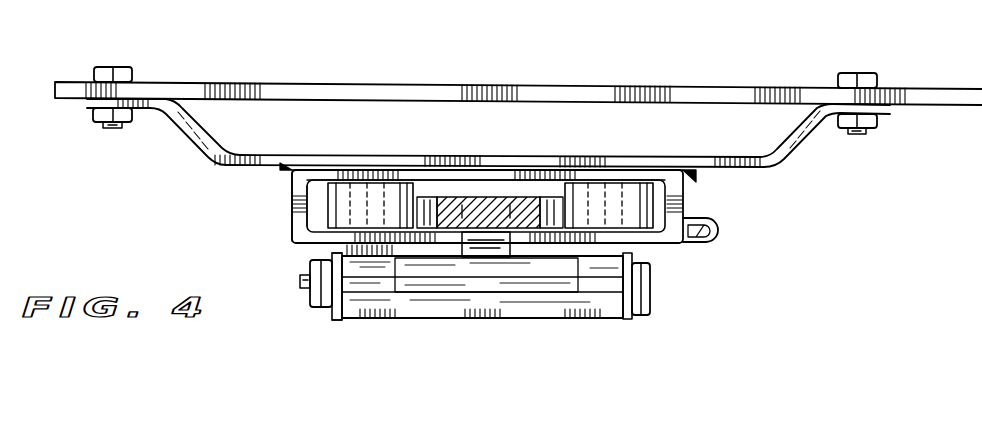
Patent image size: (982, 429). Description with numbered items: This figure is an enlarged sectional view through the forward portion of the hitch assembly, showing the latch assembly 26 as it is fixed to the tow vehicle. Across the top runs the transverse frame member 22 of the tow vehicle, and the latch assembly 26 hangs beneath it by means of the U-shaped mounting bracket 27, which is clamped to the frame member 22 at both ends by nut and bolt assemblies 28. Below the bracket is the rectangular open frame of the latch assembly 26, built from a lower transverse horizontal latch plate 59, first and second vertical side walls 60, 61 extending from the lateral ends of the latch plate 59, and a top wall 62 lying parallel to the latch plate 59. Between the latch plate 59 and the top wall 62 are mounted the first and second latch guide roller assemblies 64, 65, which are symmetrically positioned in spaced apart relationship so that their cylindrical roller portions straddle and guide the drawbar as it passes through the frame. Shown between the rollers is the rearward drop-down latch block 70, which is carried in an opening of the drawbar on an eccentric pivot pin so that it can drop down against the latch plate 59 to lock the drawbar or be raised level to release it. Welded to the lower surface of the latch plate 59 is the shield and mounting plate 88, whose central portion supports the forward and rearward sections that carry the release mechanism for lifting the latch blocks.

The transverse frame member 22 is at (628, 88).
The latch assembly 26 is at (335, 327).
The U-shaped mounting bracket 27 is at (793, 152).
The nut and bolt assemblies 28 is at (108, 67).
The latch plate 59 is at (292, 218).
The first vertical side wall 60 is at (685, 202).
The second vertical side wall 61 is at (301, 173).
The top wall 62 is at (292, 195).
The first latch guide roller assembly 64 is at (627, 200).
The second latch guide roller assembly 65 is at (388, 205).
The rearward drop-down latch block 70 is at (485, 250).
The shield and mounting plate 88 is at (665, 285).